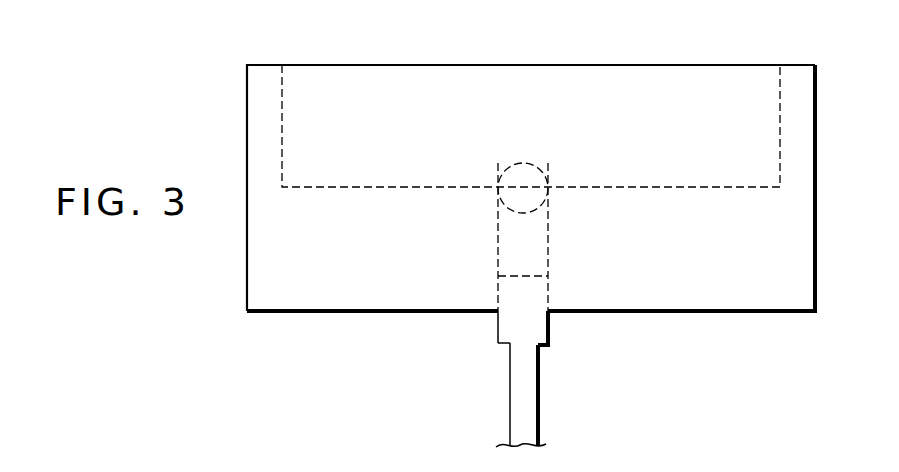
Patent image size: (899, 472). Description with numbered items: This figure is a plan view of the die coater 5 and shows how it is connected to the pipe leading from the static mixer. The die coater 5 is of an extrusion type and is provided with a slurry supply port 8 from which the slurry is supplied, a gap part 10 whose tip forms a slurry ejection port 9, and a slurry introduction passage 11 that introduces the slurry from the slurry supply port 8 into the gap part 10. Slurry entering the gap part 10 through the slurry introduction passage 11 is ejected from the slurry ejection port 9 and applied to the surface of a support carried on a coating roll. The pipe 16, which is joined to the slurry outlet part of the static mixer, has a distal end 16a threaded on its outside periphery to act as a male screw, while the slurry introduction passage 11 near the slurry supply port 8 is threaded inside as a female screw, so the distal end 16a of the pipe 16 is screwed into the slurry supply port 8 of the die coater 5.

The die coater 5 is at (774, 350).
The slurry supply port 8 is at (523, 312).
The slurry ejection port 9 is at (558, 64).
The gap part 10 is at (763, 136).
The slurry introduction passage 11 is at (498, 242).
The pipe 16 is at (527, 413).
The distal end 16a is at (508, 342).